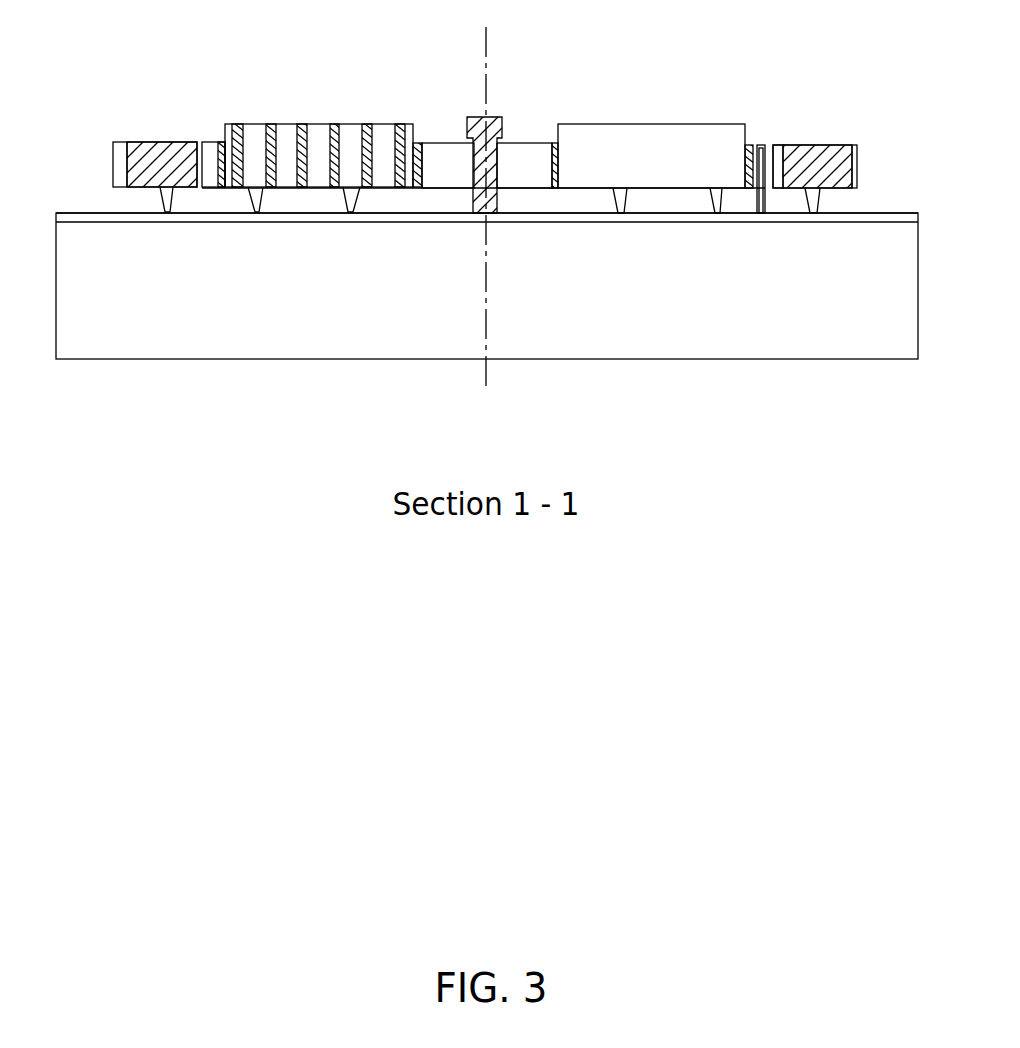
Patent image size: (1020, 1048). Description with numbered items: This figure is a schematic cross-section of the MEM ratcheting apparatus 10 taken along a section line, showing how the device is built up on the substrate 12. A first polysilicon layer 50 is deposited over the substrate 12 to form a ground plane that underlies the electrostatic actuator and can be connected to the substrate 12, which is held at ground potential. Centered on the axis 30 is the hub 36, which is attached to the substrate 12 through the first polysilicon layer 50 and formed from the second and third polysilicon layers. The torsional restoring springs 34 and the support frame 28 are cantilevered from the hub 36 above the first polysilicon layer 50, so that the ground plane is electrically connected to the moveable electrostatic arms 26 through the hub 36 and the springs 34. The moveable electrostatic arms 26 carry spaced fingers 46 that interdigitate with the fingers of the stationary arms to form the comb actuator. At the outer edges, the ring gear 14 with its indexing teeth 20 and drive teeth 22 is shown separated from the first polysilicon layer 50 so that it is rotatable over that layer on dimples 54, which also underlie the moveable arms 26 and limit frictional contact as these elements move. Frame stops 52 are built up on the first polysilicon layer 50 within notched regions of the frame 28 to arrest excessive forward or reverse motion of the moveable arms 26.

The MEM ratcheting apparatus 10 is at (796, 381).
The substrate 12 is at (121, 325).
The ring gear 14 is at (157, 140).
The indexing teeth 20 is at (779, 145).
The drive teeth 22 is at (112, 143).
The moveable electrostatic arm 26 is at (350, 123).
The support frame 28 is at (215, 142).
The axis 30 is at (487, 50).
The torsional restoring springs 34 is at (430, 175).
The hub 36 is at (477, 117).
The fingers 46 is at (300, 123).
The first polysilicon layer 50 is at (83, 212).
The frame stops 52 is at (760, 145).
The dimples 54 is at (347, 205).